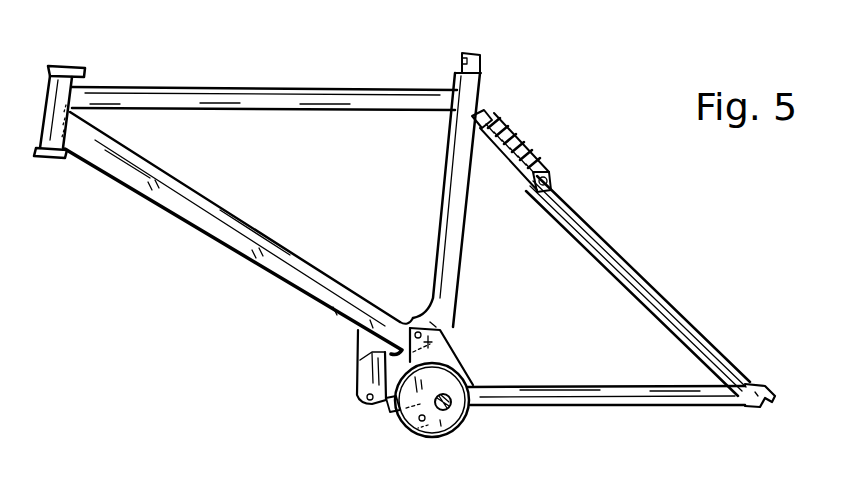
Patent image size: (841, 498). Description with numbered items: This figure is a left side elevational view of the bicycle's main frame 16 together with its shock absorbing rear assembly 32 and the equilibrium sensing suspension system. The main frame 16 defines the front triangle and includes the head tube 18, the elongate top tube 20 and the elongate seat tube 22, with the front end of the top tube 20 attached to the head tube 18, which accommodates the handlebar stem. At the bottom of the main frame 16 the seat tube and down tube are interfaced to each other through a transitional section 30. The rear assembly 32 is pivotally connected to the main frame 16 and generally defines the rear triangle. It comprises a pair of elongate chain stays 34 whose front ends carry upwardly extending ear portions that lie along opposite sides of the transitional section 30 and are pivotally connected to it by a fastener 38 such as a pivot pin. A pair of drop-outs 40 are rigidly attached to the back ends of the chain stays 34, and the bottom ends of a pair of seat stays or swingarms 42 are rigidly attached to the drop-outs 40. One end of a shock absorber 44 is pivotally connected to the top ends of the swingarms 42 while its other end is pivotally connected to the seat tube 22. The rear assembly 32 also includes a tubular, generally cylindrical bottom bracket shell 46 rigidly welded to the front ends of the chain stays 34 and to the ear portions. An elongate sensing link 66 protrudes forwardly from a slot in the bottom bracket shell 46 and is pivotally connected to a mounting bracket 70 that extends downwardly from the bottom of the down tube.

The main frame 16 is at (303, 81).
The head tube 18 is at (43, 100).
The top tube 20 is at (178, 93).
The seat tube 22 is at (478, 90).
The transitional section 30 is at (413, 316).
The shock absorbing rear assembly 32 is at (700, 315).
The chain stays 34 is at (207, 226).
The fastener 38 is at (460, 324).
The drop-outs 40 is at (773, 397).
The seat stays or swingarms 42 is at (612, 255).
The shock absorber 44 is at (527, 137).
The bottom bracket shell 46 is at (457, 432).
The sensing link 66 is at (388, 410).
The mounting bracket 70 is at (367, 358).